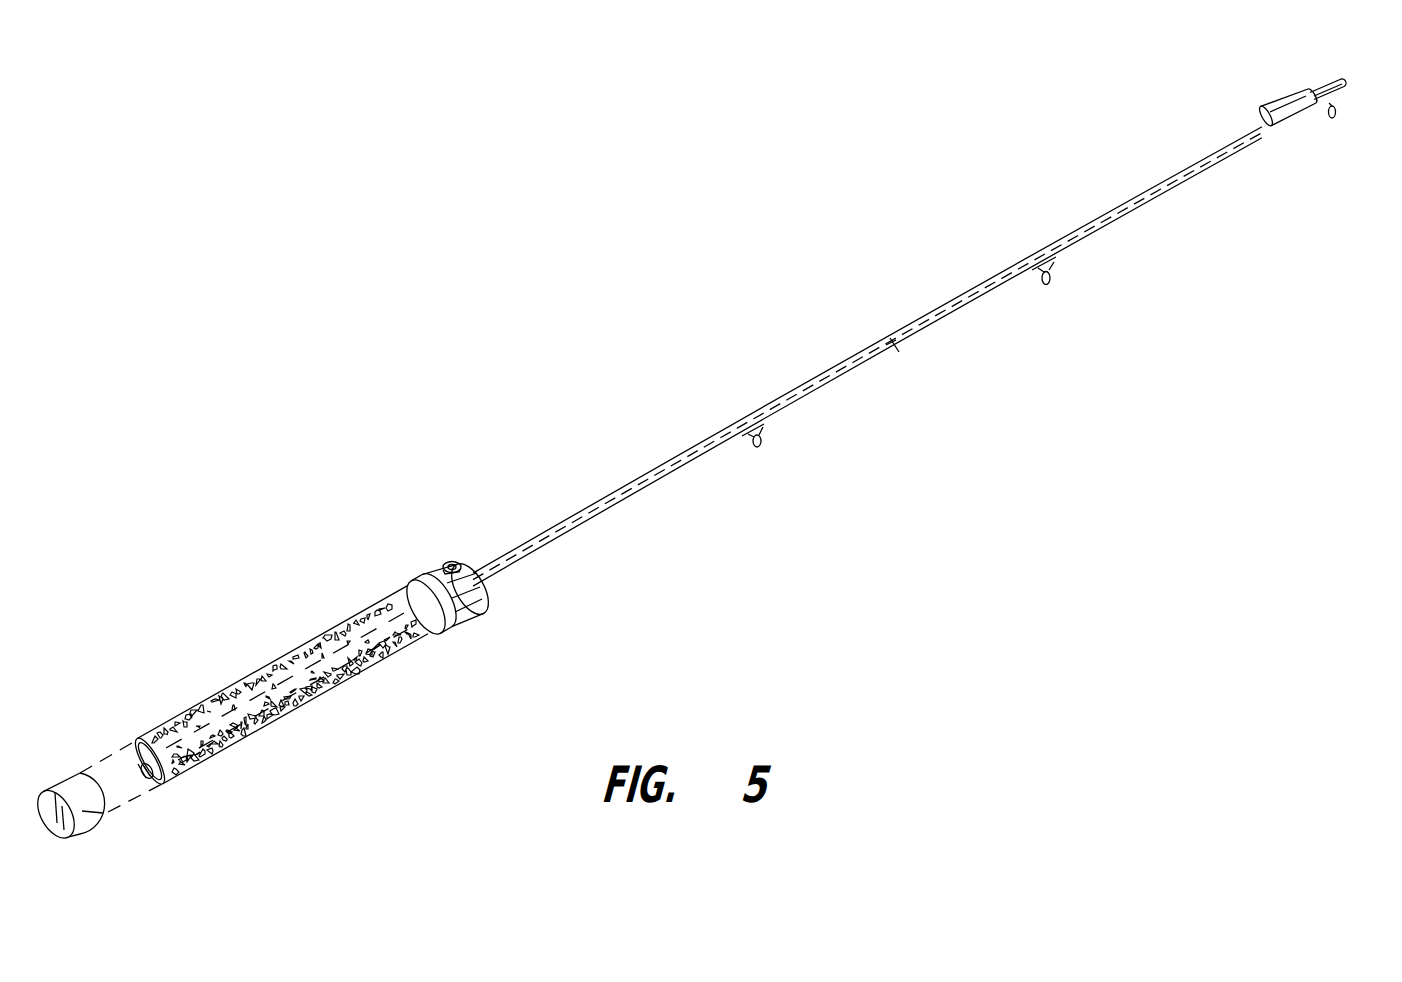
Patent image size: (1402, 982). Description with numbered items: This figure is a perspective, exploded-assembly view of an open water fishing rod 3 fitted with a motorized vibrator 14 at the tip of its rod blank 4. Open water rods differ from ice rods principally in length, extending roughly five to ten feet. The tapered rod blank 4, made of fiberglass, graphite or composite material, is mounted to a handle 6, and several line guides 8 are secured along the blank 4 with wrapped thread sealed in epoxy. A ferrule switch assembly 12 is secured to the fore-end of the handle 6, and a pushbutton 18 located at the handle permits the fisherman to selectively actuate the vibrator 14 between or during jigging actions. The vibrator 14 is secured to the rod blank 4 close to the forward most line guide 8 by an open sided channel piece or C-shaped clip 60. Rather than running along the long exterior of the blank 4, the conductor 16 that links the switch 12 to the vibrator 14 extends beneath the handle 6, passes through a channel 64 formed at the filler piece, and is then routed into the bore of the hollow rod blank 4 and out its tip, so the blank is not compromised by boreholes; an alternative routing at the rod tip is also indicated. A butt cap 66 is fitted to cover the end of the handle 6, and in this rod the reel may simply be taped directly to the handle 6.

The open water fishing rod 3 is at (687, 357).
The rod blank 4 is at (926, 316).
The handle 6 is at (312, 644).
The line guides 8 is at (759, 447).
The ferrule switch assembly 12 is at (399, 565).
The motorized vibrator 14 is at (1289, 97).
The conductor 16 is at (142, 771).
The pushbutton 18 is at (452, 562).
The C-shaped clip 60 is at (1293, 124).
The channel 64 is at (150, 790).
The butt cap 66 is at (93, 827).